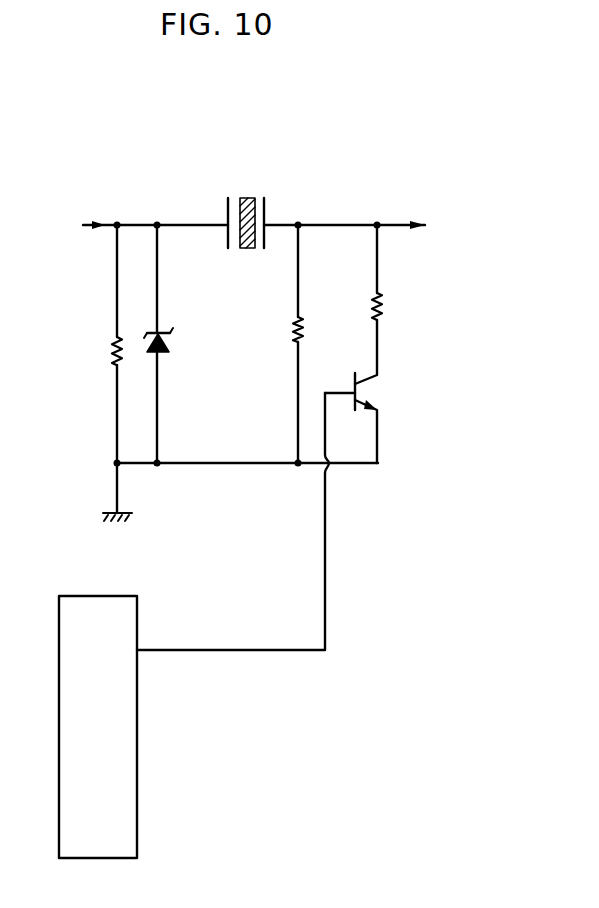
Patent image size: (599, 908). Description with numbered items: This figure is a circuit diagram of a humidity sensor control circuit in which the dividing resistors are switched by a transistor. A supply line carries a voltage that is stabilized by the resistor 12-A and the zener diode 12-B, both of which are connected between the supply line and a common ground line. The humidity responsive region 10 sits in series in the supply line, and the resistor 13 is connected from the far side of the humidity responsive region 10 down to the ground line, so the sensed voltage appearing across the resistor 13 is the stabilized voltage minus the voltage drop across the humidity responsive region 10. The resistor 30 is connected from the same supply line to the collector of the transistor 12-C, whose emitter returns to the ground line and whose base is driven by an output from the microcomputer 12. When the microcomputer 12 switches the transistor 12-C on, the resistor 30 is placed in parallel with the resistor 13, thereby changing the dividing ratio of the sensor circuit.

The humidity responsive region 10 is at (240, 198).
The microcomputer 12 is at (92, 608).
The resistor 12-A is at (105, 353).
The zener diode 12-B is at (167, 340).
The transistor 12-C is at (368, 395).
The resistor 13 is at (287, 330).
The resistor 30 is at (380, 313).